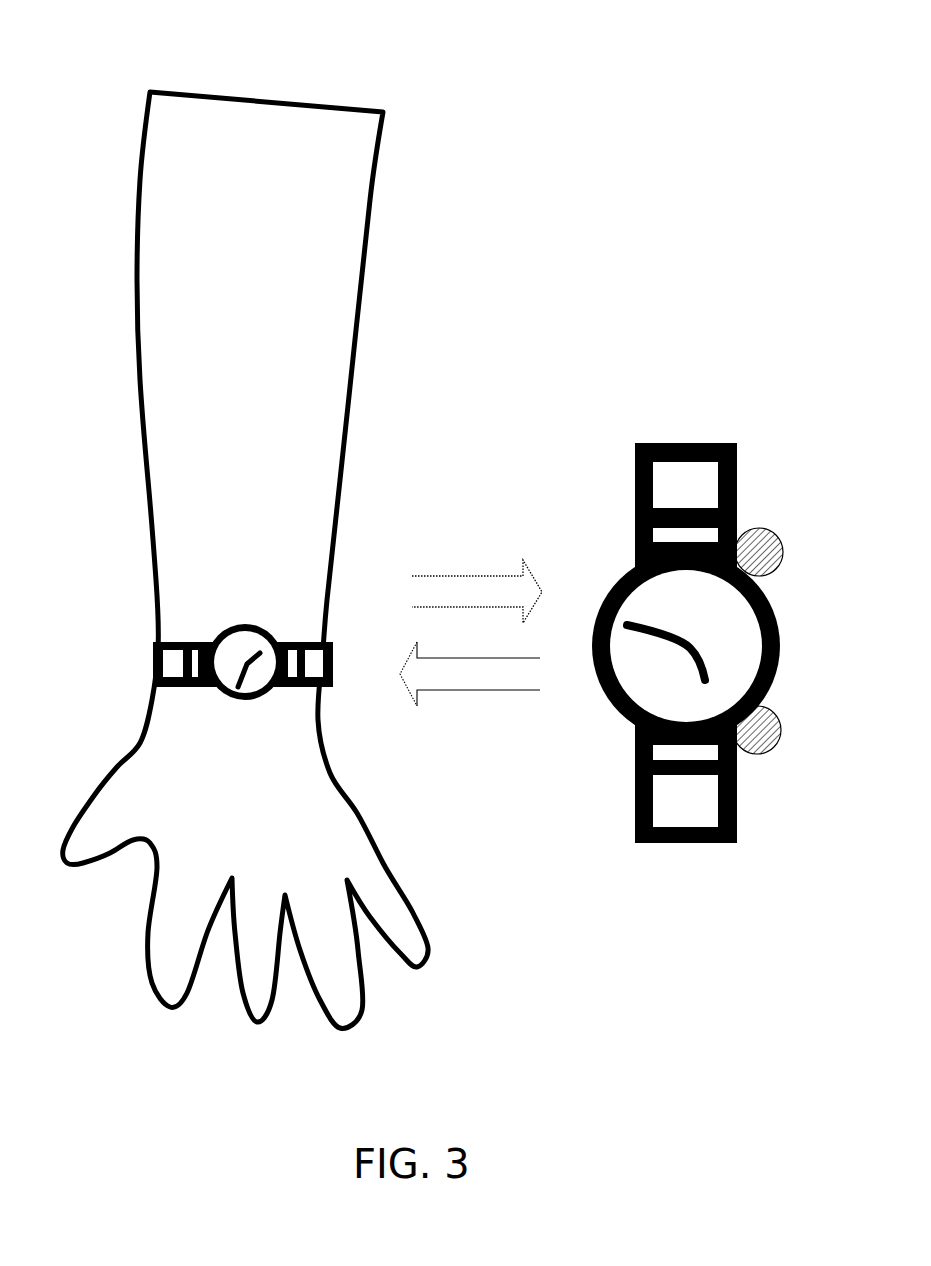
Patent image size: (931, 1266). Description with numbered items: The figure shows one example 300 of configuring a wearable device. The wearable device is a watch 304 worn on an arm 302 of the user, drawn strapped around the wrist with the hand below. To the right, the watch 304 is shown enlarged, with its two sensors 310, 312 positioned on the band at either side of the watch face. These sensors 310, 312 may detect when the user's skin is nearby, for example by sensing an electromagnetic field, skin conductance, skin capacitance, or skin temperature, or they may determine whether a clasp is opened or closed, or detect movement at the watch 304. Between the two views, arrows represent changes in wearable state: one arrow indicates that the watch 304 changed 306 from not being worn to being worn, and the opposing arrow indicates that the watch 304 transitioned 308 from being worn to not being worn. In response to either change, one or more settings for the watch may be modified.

The wearable device system on user 300 is at (132, 72).
The arm 302 is at (170, 252).
The watch 304 is at (153, 642).
The wearable state change from not being worn to being worn 306 is at (482, 578).
The transition from being worn to not being worn 308 is at (462, 692).
The sensor 310 is at (768, 530).
The sensor 312 is at (777, 740).